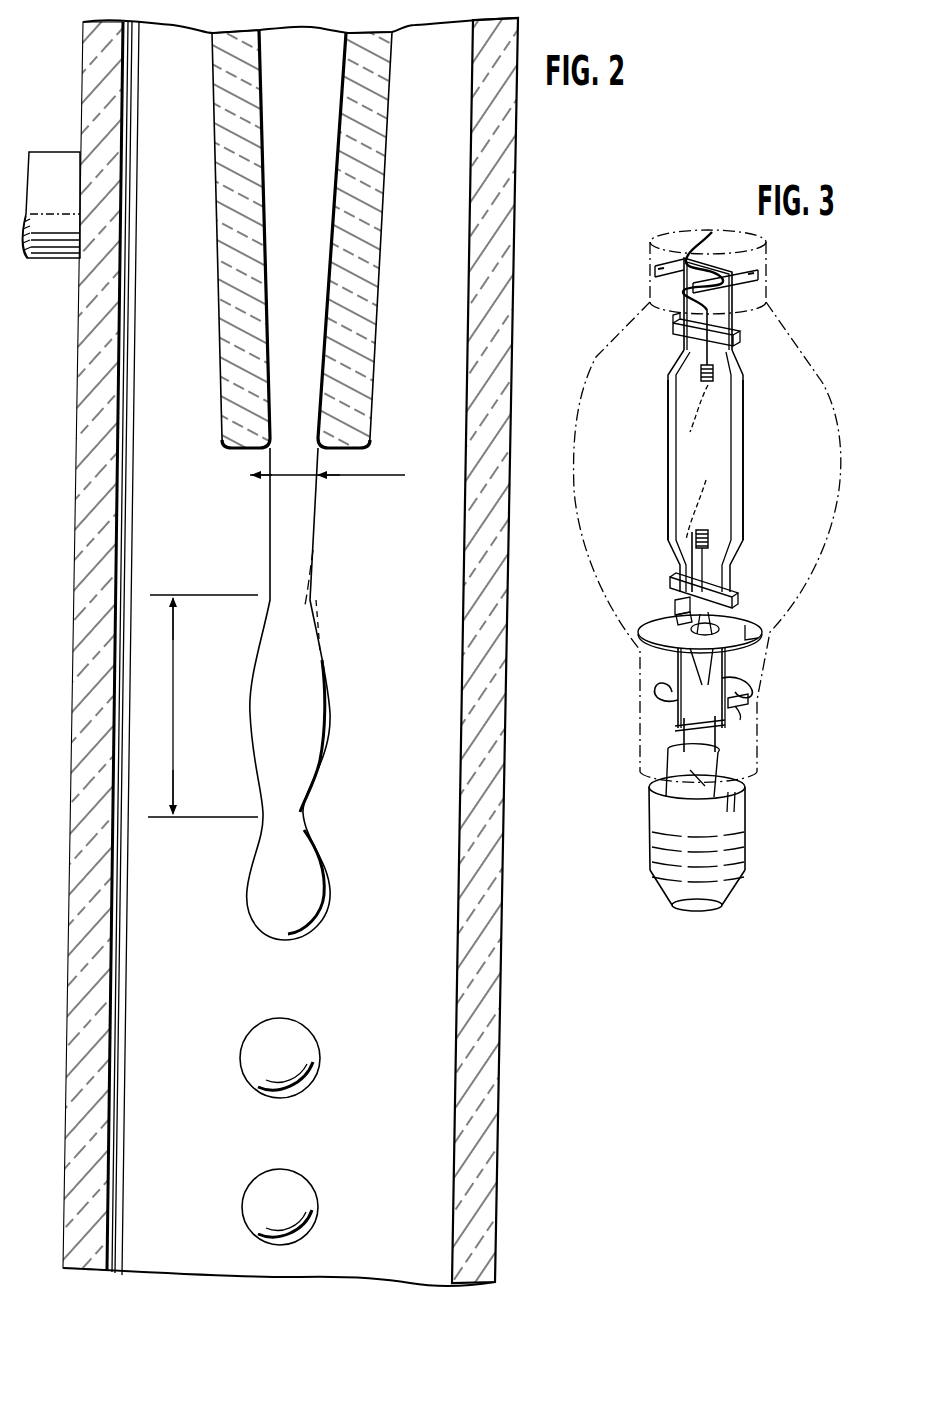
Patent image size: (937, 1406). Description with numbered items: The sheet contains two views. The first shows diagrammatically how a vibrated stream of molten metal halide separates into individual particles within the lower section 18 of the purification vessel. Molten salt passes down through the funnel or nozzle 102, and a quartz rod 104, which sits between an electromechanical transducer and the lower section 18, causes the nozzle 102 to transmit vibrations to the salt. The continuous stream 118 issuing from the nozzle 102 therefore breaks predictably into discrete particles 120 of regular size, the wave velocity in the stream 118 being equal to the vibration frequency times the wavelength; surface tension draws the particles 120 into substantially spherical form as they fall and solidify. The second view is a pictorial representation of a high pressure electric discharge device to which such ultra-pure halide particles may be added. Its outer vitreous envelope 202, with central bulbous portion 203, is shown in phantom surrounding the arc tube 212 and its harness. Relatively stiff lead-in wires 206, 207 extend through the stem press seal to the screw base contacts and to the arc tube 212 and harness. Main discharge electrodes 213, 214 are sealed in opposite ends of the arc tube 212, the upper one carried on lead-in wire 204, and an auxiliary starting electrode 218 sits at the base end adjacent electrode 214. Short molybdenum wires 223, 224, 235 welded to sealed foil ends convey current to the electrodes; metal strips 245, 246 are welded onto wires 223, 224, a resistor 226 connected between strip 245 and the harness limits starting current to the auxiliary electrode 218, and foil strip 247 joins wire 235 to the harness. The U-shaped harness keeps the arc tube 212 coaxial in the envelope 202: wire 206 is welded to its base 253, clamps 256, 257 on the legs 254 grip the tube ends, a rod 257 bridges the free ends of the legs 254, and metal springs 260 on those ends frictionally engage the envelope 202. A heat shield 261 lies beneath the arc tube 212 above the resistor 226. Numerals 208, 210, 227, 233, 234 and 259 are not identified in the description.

In FIG. 2, the lower section 18 is at (76, 849).
In FIG. 2, the nozzle 102 is at (384, 150).
In FIG. 2, the quartz rod 104 is at (60, 158).
In FIG. 2, the stream 118 is at (312, 548).
In FIG. 2, the particles 120 is at (311, 1088).
In FIG. 3, the outer vitreous envelope 202 is at (814, 351).
In FIG. 3, the central bulbous portion 203 is at (828, 388).
In FIG. 3, the lead-in wire 204 is at (722, 358).
In FIG. 3, the lead-in wire 206 is at (717, 740).
In FIG. 3, the lead-in wire 207 is at (682, 733).
In FIG. 3, the screw base 208 is at (730, 815).
In FIG. 3, the stem 210 is at (720, 782).
In FIG. 3, the arc tube 212 is at (720, 484).
In FIG. 3, the main discharge electrode 213 is at (707, 393).
In FIG. 3, the main discharge electrode 214 is at (710, 545).
In FIG. 3, the auxiliary starting electrode 218 is at (689, 543).
In FIG. 3, the molybdenum wire 223 is at (676, 606).
In FIG. 3, the molybdenum wire 224 is at (673, 620).
In FIG. 3, the resistor 226 is at (740, 702).
In FIG. 3, the resistor lead 227 is at (740, 710).
In FIG. 3, the support rods 233 is at (745, 653).
In FIG. 3, the connecting wire 234 is at (696, 650).
In FIG. 3, the molybdenum wire 235 is at (712, 322).
In FIG. 3, the metal strip 245 is at (752, 684).
In FIG. 3, the metal strip 246 is at (652, 703).
In FIG. 3, the metal foil strip 247 is at (662, 306).
In FIG. 3, the base of the harness 253 is at (700, 724).
In FIG. 3, the legs of the harness 254 is at (668, 440).
In FIG. 3, the clamp 256 is at (673, 579).
In FIG. 3, the rod 257 is at (680, 342).
In FIG. 3, the spring clip 259 is at (712, 234).
In FIG. 3, the metal springs 260 is at (654, 272).
In FIG. 3, the heat shield 261 is at (650, 628).